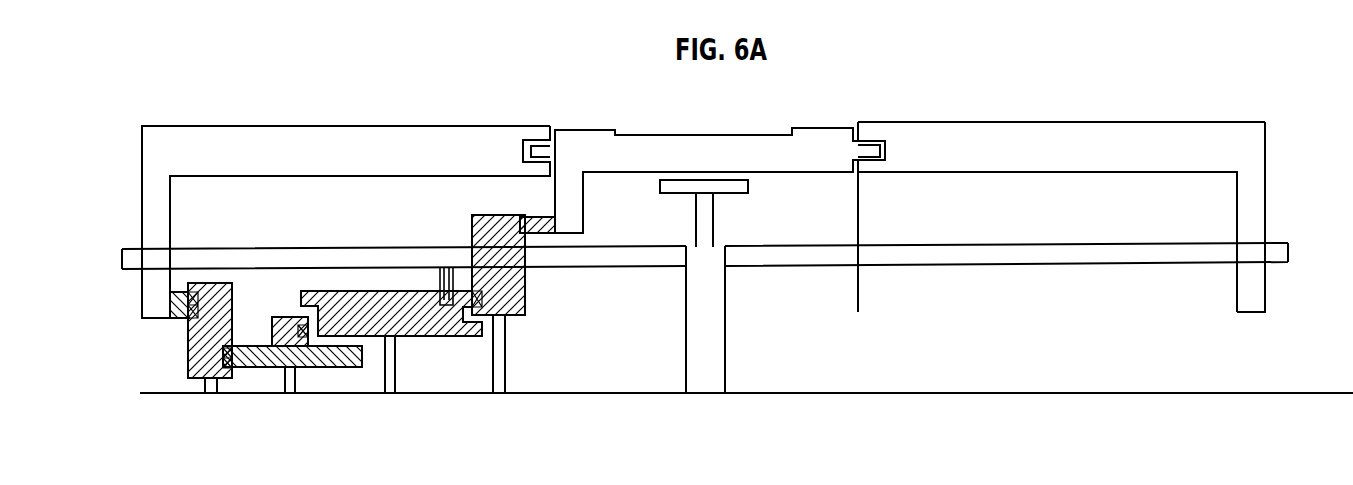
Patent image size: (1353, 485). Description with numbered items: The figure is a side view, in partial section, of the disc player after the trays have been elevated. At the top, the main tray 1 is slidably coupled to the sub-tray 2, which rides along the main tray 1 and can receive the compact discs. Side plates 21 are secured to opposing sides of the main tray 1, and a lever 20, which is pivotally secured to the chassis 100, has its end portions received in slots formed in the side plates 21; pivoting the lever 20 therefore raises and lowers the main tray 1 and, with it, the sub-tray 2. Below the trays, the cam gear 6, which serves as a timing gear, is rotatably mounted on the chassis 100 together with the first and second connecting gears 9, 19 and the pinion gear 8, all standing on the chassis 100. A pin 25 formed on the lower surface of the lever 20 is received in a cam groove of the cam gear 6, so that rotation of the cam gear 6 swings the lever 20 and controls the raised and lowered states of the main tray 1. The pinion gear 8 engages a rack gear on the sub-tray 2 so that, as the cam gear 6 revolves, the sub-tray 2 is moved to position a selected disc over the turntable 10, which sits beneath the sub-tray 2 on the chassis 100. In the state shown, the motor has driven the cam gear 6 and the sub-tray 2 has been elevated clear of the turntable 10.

The main tray 1 is at (267, 137).
The sub-tray 2 is at (805, 137).
The cam gear 6 is at (390, 396).
The pinion gear 8 is at (499, 396).
The first connecting gear 9 is at (290, 396).
The turntable 10 is at (680, 186).
The second connecting gear 19 is at (210, 396).
The lever 20 is at (128, 256).
The side plates 21 is at (142, 157).
The pin 25 is at (444, 268).
The chassis 100 is at (995, 395).